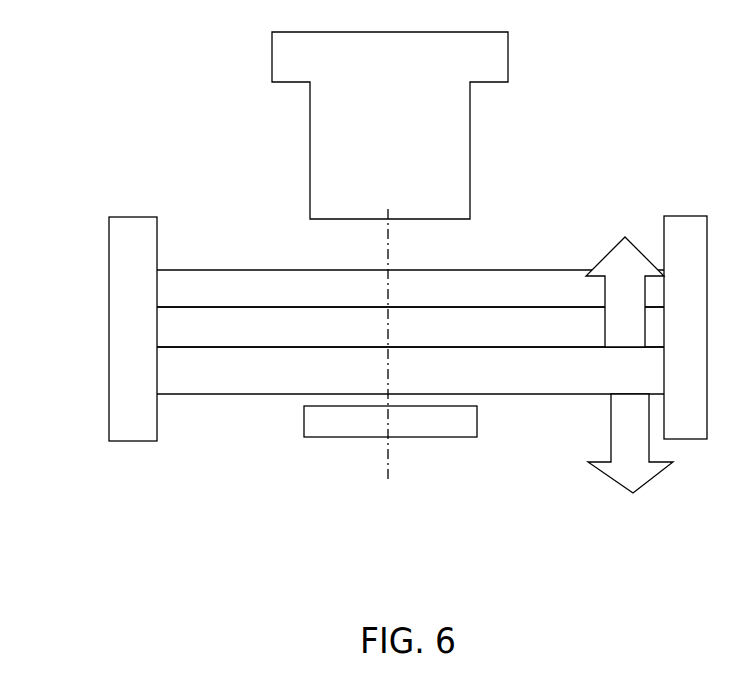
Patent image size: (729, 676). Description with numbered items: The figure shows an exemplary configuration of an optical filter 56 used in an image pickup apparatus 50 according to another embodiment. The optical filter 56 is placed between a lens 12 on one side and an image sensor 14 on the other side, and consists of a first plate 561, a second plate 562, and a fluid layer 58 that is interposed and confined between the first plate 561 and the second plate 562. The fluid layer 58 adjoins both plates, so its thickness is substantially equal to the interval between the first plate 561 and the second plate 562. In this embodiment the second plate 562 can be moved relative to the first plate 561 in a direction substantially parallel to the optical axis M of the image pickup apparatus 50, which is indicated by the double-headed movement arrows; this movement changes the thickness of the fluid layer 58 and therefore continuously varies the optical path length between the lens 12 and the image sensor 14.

The image pickup apparatus 50 is at (57, 24).
The lens 12 is at (395, 145).
The optical filter 56 is at (410, 332).
The first plate 561 is at (457, 296).
The second plate 562 is at (459, 375).
The fluid layer 58 is at (411, 335).
The image sensor 14 is at (413, 430).
The optical axis M is at (388, 466).